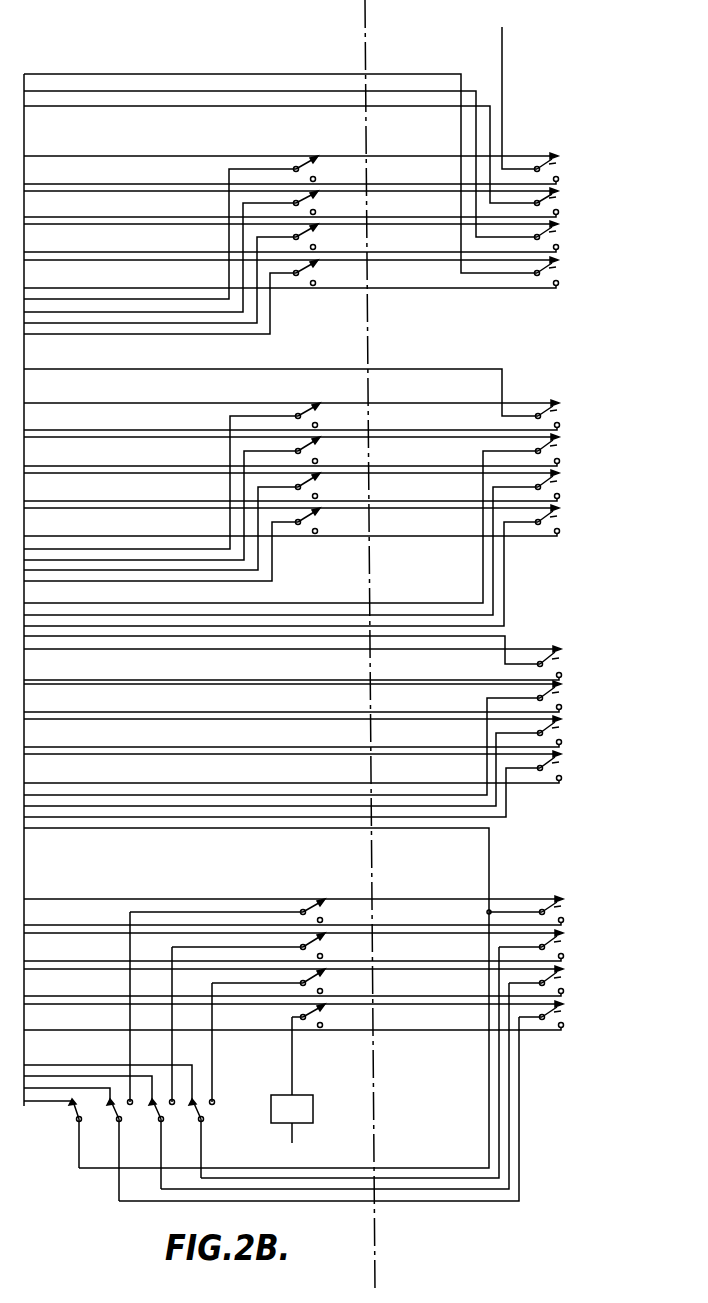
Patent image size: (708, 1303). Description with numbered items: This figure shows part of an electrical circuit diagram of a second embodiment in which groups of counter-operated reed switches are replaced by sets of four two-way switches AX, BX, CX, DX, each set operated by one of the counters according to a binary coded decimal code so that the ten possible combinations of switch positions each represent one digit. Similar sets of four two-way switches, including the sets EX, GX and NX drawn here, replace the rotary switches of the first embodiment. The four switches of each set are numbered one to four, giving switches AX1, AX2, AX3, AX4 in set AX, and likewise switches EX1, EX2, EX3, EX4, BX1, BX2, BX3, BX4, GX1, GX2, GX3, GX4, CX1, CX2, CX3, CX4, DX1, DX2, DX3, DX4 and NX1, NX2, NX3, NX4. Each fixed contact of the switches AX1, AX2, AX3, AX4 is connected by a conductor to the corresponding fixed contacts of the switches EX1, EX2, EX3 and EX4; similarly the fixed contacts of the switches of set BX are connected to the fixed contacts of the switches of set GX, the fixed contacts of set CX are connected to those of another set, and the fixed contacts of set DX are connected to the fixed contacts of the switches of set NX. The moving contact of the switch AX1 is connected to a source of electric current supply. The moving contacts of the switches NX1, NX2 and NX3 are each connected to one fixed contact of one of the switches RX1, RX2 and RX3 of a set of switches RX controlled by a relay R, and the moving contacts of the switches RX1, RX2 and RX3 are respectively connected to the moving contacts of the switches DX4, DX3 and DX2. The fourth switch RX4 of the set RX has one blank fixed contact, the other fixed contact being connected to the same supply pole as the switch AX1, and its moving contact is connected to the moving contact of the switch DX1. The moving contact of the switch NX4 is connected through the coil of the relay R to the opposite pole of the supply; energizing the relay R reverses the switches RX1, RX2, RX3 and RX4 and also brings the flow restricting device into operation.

The set of four two-way switches AX is at (336, 157).
The counter-operated switch AX1 is at (552, 107).
The counter-operated switch AX2 is at (313, 164).
The counter-operated switch AX3 is at (313, 172).
The counter-operated switch AX4 is at (313, 181).
The set of four two-way switches EX is at (238, 221).
The switch EX1 is at (319, 168).
The switch EX2 is at (322, 203).
The switch EX3 is at (315, 238).
The switch EX4 is at (308, 274).
The set of four two-way switches BX is at (333, 497).
The counter-operated switch BX1 is at (313, 401).
The counter-operated switch BX2 is at (313, 518).
The counter-operated switch BX3 is at (313, 542).
The counter-operated switch BX4 is at (313, 565).
The set of four two-way switches GX is at (224, 475).
The switch GX1 is at (305, 416).
The switch GX2 is at (315, 450).
The switch GX3 is at (317, 486).
The switch GX4 is at (317, 518).
The set of four two-way switches CX is at (334, 726).
The counter-operated switch CX1 is at (313, 657).
The counter-operated switch CX2 is at (313, 738).
The counter-operated switch CX3 is at (314, 761).
The counter-operated switch CX4 is at (313, 784).
The set of four two-way switches DX is at (334, 1014).
The counter-operated switch DX1 is at (314, 998).
The counter-operated switch DX2 is at (403, 1054).
The counter-operated switch DX3 is at (383, 1077).
The counter-operated switch DX4 is at (362, 1101).
The set of four two-way switches NX is at (280, 981).
The switch NX1 is at (307, 912).
The switch NX2 is at (323, 947).
The switch NX3 is at (312, 985).
The switch NX4 is at (323, 1013).
The set of switches RX is at (141, 1139).
The relay-controlled switch RX1 is at (115, 1105).
The relay-controlled switch RX2 is at (162, 1107).
The relay-controlled switch RX3 is at (197, 1105).
The relay-controlled switch RX4 is at (72, 1105).
The relay R is at (297, 1108).